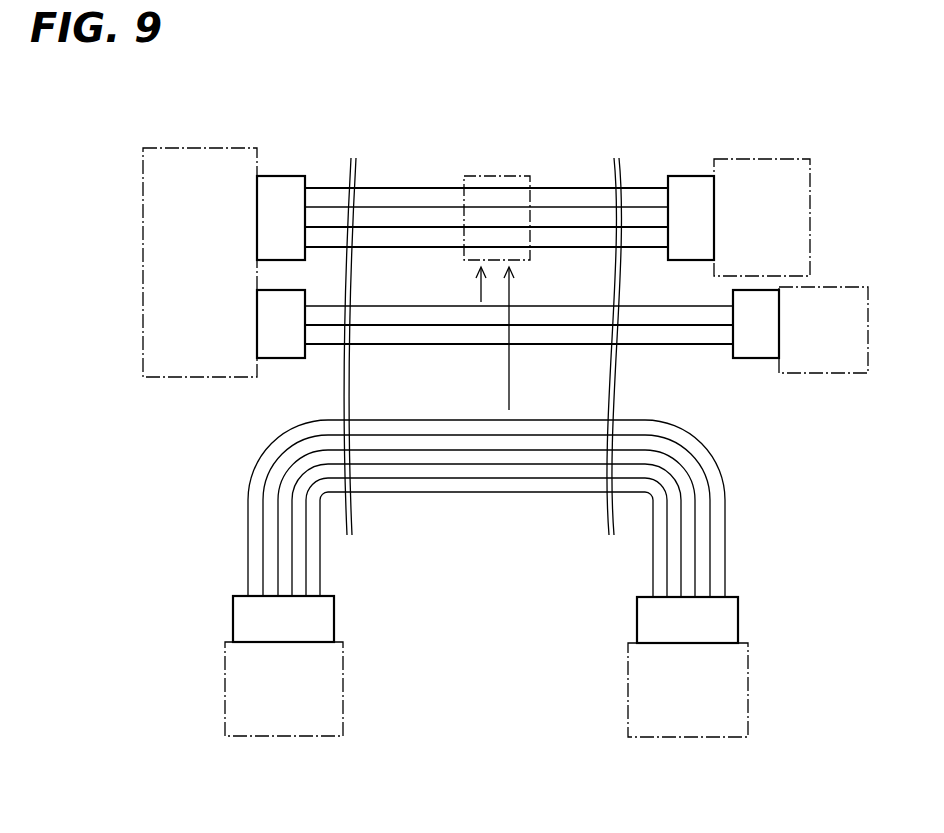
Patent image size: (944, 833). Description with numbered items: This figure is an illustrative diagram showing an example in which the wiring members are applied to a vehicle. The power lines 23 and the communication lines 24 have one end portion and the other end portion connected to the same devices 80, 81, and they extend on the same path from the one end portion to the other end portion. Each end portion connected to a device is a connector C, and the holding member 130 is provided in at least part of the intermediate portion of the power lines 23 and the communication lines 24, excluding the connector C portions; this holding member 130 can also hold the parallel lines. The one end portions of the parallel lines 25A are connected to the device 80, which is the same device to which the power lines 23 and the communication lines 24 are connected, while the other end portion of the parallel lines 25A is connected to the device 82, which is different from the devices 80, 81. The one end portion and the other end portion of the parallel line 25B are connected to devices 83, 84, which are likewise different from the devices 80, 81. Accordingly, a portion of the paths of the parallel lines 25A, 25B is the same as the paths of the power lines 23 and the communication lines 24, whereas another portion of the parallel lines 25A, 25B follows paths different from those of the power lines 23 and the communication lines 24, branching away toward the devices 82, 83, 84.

The device 80 is at (211, 148).
The device 81 is at (763, 159).
The device 82 is at (826, 374).
The device 83 is at (272, 737).
The device 84 is at (697, 738).
The connector C is at (283, 180).
The power lines 23 is at (393, 206).
The communication lines 24 is at (433, 247).
The parallel lines 25A is at (392, 307).
The parallel line 25B is at (460, 450).
The holding member 130 is at (499, 176).